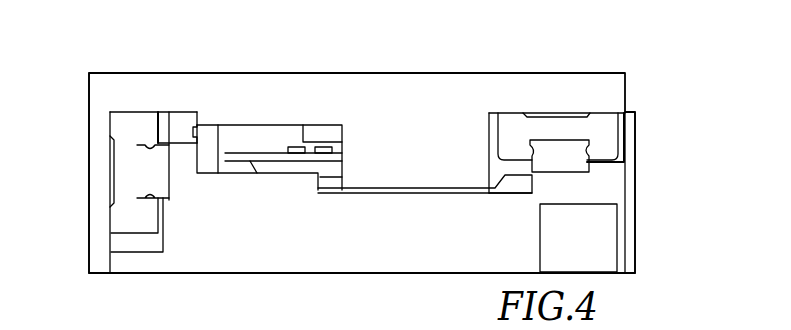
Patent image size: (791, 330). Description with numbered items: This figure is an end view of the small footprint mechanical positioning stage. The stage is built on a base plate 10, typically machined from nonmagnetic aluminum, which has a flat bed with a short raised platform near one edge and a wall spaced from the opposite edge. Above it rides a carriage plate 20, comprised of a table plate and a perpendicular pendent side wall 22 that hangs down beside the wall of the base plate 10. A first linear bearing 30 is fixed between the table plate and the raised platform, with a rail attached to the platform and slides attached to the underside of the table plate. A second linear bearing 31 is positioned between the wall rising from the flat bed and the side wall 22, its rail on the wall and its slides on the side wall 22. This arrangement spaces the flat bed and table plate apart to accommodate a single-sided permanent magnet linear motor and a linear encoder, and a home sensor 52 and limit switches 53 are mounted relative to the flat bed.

The base plate 10 is at (195, 262).
The carriage plate 20 is at (402, 87).
The side wall 22 is at (97, 228).
The first linear bearing 30 is at (636, 127).
The second linear bearing 31 is at (92, 159).
The home sensor 52 is at (297, 147).
The limit switches 53 is at (330, 147).